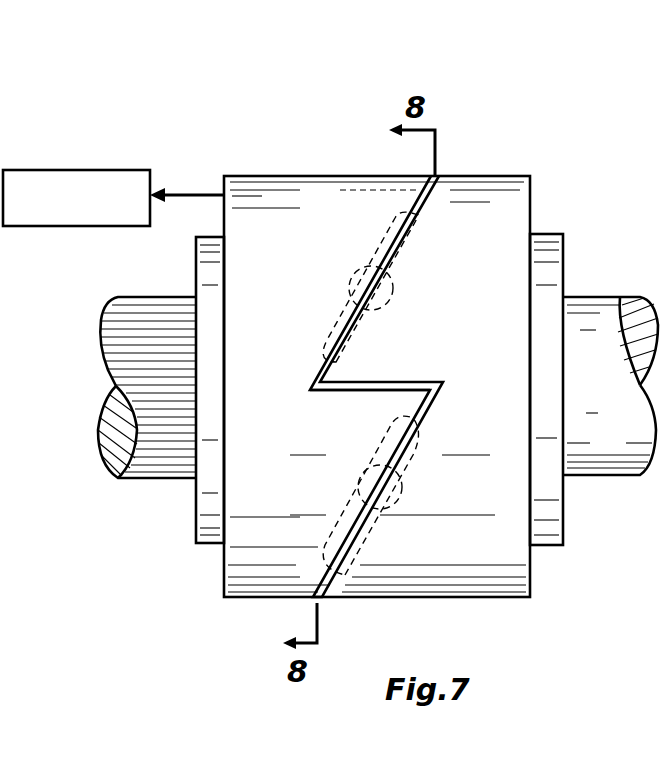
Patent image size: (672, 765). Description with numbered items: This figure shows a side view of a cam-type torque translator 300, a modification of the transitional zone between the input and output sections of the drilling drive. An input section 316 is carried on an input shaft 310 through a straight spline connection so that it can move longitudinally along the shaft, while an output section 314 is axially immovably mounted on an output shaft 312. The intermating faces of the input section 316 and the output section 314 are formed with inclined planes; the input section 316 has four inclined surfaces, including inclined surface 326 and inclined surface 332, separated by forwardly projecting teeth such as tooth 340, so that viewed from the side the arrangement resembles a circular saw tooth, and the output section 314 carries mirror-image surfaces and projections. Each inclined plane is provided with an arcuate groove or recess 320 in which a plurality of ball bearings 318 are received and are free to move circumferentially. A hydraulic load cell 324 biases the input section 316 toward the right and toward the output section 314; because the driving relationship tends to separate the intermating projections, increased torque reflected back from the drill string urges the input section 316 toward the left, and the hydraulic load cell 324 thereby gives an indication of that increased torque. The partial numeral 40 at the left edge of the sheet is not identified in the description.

The load sensing assembly 300 is at (358, 130).
The first shaft 310 is at (101, 316).
The second shaft 312 is at (594, 318).
The coupling body 314 is at (512, 556).
The coupling body lower portion 316 is at (291, 563).
The upper strain gage 318 is at (358, 277).
The upper gage region 320 is at (418, 243).
The hydraulic load cell 324 is at (93, 170).
The upper slot 326 is at (318, 378).
The lower strain gage 332 is at (396, 453).
The transverse slot 340 is at (349, 391).
The reference numeral 40 is at (10, 383).